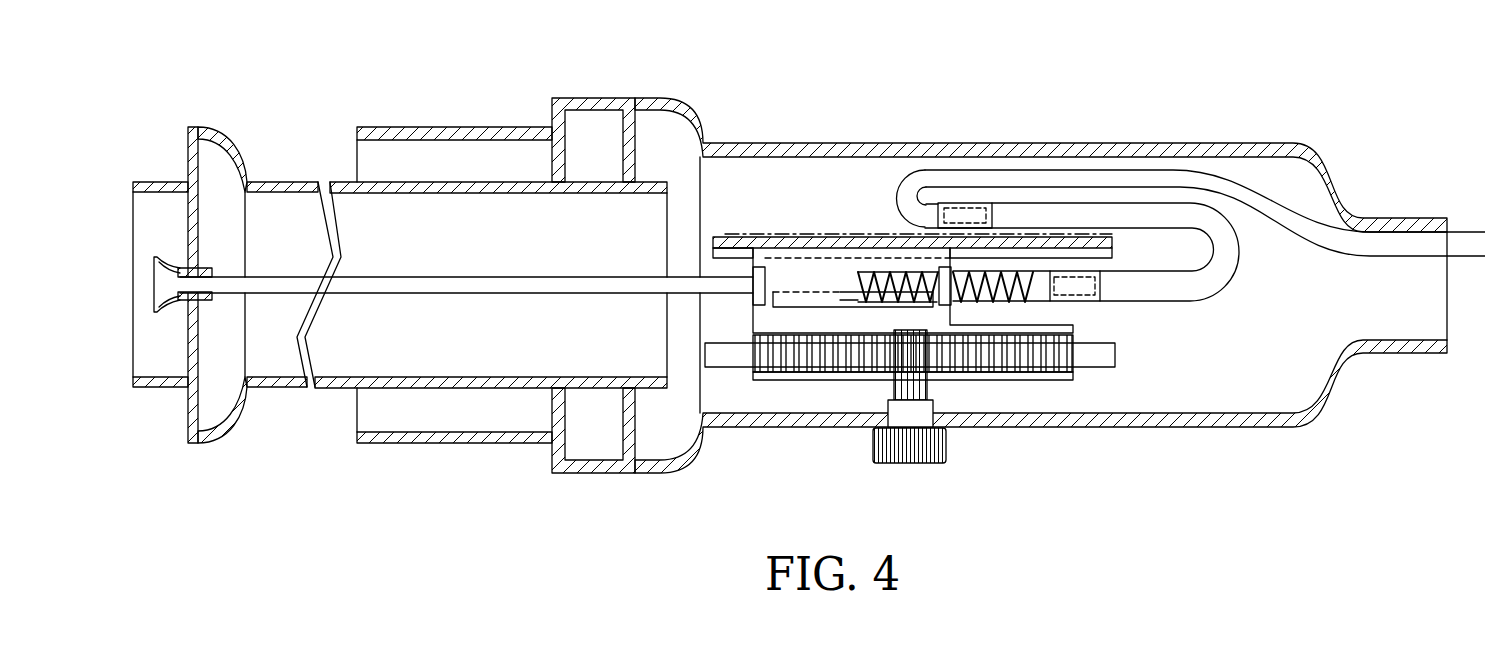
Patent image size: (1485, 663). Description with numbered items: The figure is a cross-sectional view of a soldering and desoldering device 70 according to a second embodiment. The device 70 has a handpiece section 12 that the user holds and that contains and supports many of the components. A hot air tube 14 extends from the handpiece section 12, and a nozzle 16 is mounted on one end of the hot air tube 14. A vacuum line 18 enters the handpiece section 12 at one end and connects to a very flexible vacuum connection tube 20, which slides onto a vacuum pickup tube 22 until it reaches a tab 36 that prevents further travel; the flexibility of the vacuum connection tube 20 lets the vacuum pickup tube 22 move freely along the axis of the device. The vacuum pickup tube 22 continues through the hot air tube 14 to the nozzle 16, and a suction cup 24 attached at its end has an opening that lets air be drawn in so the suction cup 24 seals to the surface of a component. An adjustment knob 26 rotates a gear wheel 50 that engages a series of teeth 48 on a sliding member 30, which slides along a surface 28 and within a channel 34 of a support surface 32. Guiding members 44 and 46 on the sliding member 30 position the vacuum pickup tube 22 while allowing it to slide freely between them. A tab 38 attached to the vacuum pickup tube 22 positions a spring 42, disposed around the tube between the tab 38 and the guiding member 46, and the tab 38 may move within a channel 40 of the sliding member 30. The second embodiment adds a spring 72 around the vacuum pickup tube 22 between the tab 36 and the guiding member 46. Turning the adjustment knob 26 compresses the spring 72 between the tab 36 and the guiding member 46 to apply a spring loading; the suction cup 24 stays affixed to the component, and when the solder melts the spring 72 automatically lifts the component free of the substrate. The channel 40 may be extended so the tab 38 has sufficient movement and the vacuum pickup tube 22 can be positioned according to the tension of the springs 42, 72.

The handpiece section 12 is at (1150, 144).
The hot air tube 14 is at (340, 182).
The nozzle 16 is at (163, 182).
The vacuum line 18 is at (1300, 212).
The vacuum connection tube 20 is at (1240, 272).
The vacuum pickup tube 22 is at (406, 296).
The suction cup 24 is at (160, 262).
The adjustment knob 26 is at (947, 443).
The surface 28 is at (1102, 358).
The sliding member 30 is at (785, 380).
The support surface 32 is at (808, 238).
The channel 34 is at (740, 252).
The tab 36 is at (1038, 301).
The tab 38 is at (843, 306).
The channel 40 is at (890, 306).
The spring 42 is at (900, 272).
The guiding member 44 is at (753, 300).
The guiding member 46 is at (951, 302).
The teeth 48 is at (990, 372).
The gear wheel 50 is at (893, 386).
The soldering and desoldering device 70 is at (1048, 84).
The spring 72 is at (1000, 275).